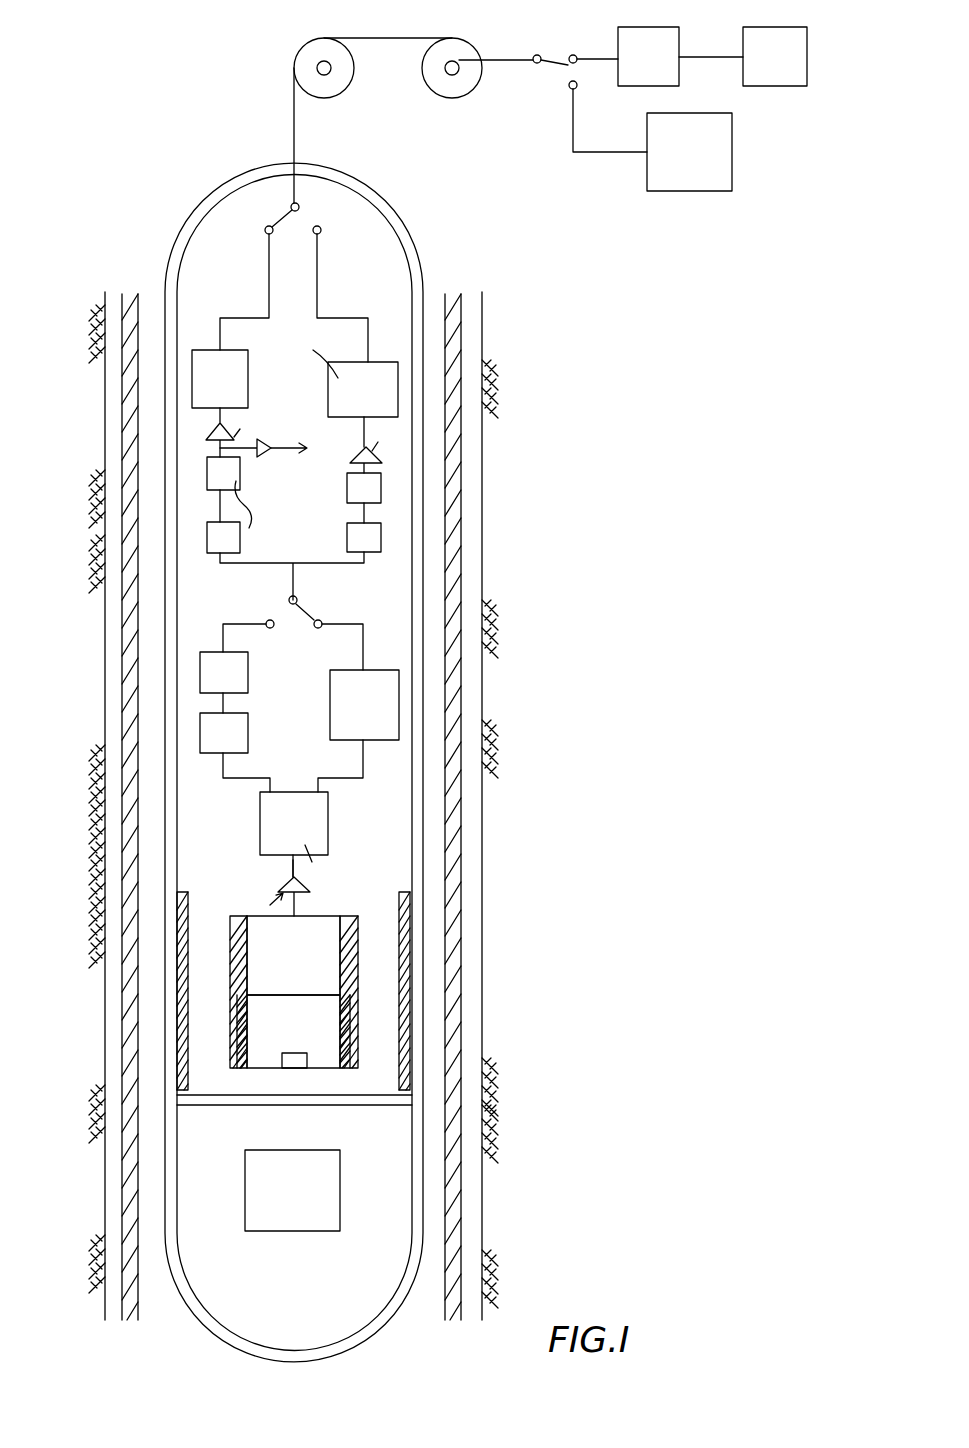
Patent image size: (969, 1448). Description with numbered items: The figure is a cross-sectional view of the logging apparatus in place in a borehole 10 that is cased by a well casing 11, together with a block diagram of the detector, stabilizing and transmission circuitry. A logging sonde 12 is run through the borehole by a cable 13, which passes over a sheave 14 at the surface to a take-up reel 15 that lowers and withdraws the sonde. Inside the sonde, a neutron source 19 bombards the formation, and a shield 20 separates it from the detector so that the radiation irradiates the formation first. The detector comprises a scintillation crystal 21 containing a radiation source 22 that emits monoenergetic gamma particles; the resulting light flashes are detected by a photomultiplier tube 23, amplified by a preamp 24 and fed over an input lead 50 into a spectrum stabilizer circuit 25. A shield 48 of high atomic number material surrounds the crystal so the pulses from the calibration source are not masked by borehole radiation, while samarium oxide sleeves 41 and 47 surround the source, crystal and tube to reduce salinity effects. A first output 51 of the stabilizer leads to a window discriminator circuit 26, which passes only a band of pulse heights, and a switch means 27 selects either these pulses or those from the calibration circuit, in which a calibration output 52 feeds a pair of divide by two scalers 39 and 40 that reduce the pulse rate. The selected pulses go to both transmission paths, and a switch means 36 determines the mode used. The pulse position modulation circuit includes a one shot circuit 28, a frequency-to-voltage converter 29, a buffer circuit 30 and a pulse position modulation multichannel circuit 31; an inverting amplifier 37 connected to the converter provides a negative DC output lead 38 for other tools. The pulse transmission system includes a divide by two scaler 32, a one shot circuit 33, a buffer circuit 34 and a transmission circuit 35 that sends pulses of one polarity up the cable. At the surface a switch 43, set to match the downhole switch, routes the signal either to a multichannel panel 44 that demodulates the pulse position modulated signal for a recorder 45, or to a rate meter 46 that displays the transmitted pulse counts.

The borehole 10 is at (105, 310).
The well casing 11 is at (455, 297).
The logging sonde 12 is at (405, 222).
The cable 13 is at (293, 115).
The sheave 14 is at (313, 55).
The take-up reel 15 is at (465, 42).
The neutron source 19 is at (340, 1213).
The shield 20 is at (228, 1107).
The scintillation crystal 21 is at (350, 1032).
The radiation source 22 is at (289, 1070).
The photomultiplier tube 23 is at (340, 957).
The preamp 24 is at (310, 888).
The spectrum stabilizer circuit 25 is at (328, 830).
The window discriminator circuit 26 is at (399, 703).
The switch means 27 is at (310, 614).
The one shot circuit 28 is at (207, 540).
The frequency-to-voltage converter 29 is at (207, 472).
The buffer circuit 30 is at (208, 433).
The pulse position modulation multichannel circuit 31 is at (192, 378).
The divide by 2 scaler 32 is at (381, 537).
The one shot circuit 33 is at (381, 490).
The buffer circuit 34 is at (382, 455).
The transmission circuit 35 is at (398, 390).
The switch means 36 is at (318, 200).
The inverting amplifier 37 is at (262, 462).
The negative DC output lead 38 is at (293, 445).
The divide by 2 scaler 39 is at (200, 731).
The divide by 2 scaler 40 is at (200, 672).
The samarium oxide sleeve 41 is at (178, 1058).
The switch 43 is at (545, 50).
The multichannel panel 44 is at (666, 27).
The recorder 45 is at (793, 27).
The rate meter 46 is at (698, 191).
The samarium oxide sleeve 47 is at (230, 966).
The shield 48 is at (348, 1070).
The input lead 50 is at (290, 877).
The first output 51 is at (343, 778).
The calibration output 52 is at (250, 780).